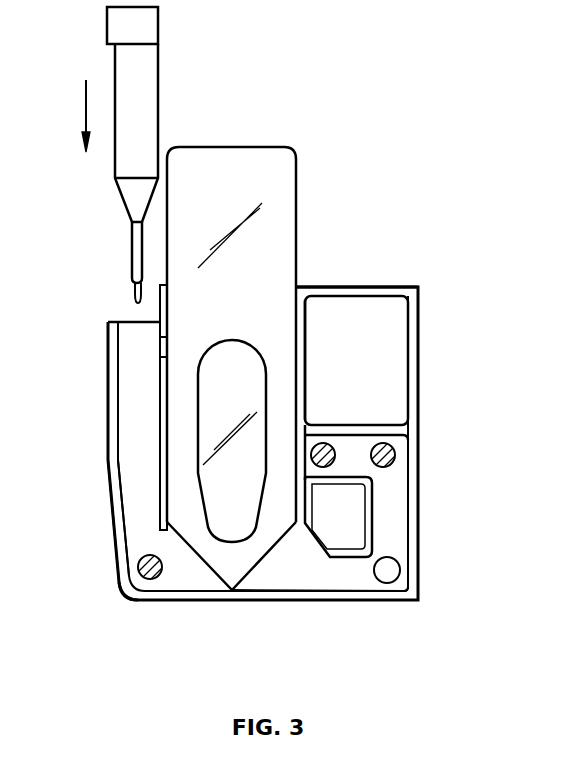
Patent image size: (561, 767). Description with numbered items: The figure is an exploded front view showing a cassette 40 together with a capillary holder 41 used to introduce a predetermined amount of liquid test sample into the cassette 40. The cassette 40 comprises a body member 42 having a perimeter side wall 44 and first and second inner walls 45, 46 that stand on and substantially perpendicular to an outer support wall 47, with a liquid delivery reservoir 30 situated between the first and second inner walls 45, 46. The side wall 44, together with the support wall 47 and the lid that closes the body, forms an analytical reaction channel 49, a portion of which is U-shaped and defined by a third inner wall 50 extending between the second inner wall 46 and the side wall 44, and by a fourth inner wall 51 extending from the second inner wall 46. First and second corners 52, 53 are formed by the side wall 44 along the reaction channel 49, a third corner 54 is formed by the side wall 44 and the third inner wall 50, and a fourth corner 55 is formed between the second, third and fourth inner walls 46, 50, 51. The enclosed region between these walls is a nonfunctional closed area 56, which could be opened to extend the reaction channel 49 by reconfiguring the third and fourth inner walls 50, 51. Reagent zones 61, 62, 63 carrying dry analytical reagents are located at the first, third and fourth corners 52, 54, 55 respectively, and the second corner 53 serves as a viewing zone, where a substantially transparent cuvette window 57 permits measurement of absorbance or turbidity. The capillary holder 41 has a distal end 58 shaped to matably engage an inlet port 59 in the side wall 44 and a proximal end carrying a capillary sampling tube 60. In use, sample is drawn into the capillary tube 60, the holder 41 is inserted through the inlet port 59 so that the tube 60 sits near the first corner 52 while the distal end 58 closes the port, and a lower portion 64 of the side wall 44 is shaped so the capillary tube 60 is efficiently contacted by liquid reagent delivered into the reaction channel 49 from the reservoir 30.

The cassette 40 is at (405, 150).
The capillary holder 41 is at (147, 124).
The distal end 58 is at (146, 29).
The capillary sampling tube 60 is at (136, 297).
The inlet port 59 is at (130, 320).
The liquid delivery reservoir 30 is at (207, 568).
The perimeter side wall 44 is at (108, 396).
The first inner wall 45 is at (160, 422).
The lower portion of side wall 64 is at (110, 525).
The reagent zone 61 is at (138, 567).
The first corner 52 is at (130, 600).
The analytical reaction channel 49 is at (268, 570).
The outer support wall 47 is at (318, 572).
The cuvette window 57 is at (383, 584).
The second corner 53 is at (402, 585).
The fourth inner wall 51 is at (375, 536).
The closed area 56 is at (368, 317).
The second inner wall 46 is at (305, 336).
The body member 42 is at (418, 294).
The third inner wall 50 is at (397, 425).
The third corner 54 is at (413, 430).
The reagent zone 62 is at (400, 456).
The fourth corner 55 is at (312, 428).
The reagent zone 63 is at (338, 453).